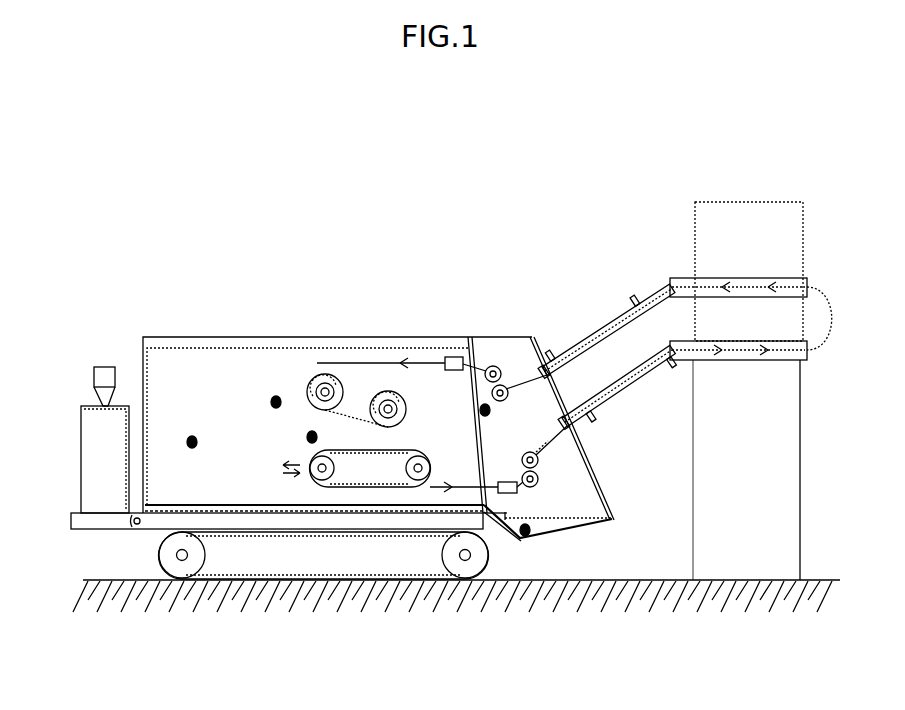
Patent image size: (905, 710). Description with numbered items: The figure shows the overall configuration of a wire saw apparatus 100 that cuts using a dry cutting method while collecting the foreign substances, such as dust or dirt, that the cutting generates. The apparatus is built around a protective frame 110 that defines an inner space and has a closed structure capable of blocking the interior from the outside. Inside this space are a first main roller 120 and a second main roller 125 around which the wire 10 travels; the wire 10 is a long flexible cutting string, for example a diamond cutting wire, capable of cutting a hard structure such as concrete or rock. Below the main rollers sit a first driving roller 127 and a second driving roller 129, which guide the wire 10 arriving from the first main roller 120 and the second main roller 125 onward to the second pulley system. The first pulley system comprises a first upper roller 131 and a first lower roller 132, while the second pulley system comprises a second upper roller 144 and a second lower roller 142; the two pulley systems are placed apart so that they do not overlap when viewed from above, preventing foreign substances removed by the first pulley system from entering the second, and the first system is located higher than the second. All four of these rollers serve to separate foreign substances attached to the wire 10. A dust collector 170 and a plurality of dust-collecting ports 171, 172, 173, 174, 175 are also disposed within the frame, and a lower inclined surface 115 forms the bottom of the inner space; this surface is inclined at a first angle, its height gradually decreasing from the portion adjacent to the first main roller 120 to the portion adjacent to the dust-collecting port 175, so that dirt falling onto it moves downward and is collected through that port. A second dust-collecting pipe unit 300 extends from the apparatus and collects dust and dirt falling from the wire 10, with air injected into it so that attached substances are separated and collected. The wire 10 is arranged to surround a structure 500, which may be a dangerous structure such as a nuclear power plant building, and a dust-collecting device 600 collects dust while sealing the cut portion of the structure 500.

The wire saw apparatus 100 is at (476, 177).
The protective frame 110 is at (236, 337).
The lower inclined surface 115 is at (270, 507).
The first main roller 120 is at (312, 375).
The second main roller 125 is at (386, 392).
The first driving roller 127 is at (332, 490).
The second driving roller 129 is at (431, 455).
The first upper roller 131 is at (490, 366).
The first lower roller 132 is at (505, 386).
The second lower roller 142 is at (538, 481).
The second upper roller 144 is at (538, 462).
The wire 10 is at (548, 440).
The dust collector 170 is at (80, 447).
The dust-collecting port 171 is at (190, 429).
The dust-collecting port 172 is at (276, 390).
The dust-collecting port 173 is at (295, 437).
The dust-collecting port 174 is at (495, 422).
The dust-collecting port 175 is at (541, 544).
The second dust-collecting pipe unit 300 is at (588, 340).
The structure 500 is at (757, 216).
The dust-collecting device 600 is at (810, 360).